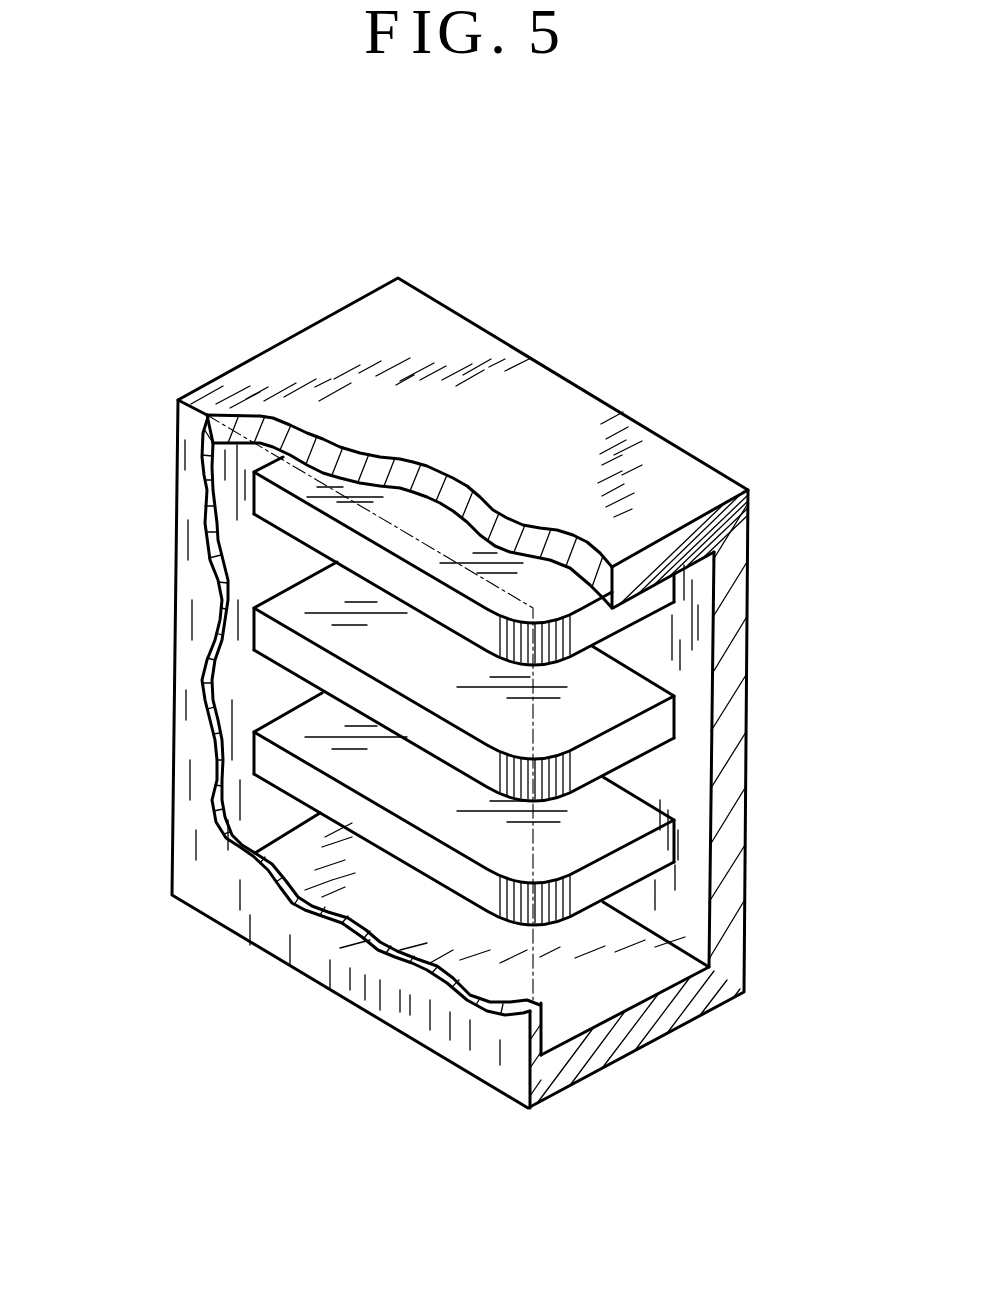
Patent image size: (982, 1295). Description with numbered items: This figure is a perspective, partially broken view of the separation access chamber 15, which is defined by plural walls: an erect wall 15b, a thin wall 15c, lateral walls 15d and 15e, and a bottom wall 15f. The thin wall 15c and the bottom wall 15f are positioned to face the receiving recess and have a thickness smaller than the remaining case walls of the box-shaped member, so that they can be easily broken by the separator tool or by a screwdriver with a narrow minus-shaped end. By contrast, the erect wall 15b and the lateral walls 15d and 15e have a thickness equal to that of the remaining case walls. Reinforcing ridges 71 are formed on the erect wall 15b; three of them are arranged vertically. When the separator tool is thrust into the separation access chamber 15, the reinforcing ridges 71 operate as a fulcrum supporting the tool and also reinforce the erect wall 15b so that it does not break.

The separation access chamber 15 is at (630, 302).
The erect wall 15b is at (690, 667).
The thin wall 15c is at (242, 908).
The lateral wall 15d is at (420, 337).
The lateral wall 15e is at (593, 1003).
The bottom wall 15f is at (230, 498).
The reinforcing ridges 71 is at (650, 603).